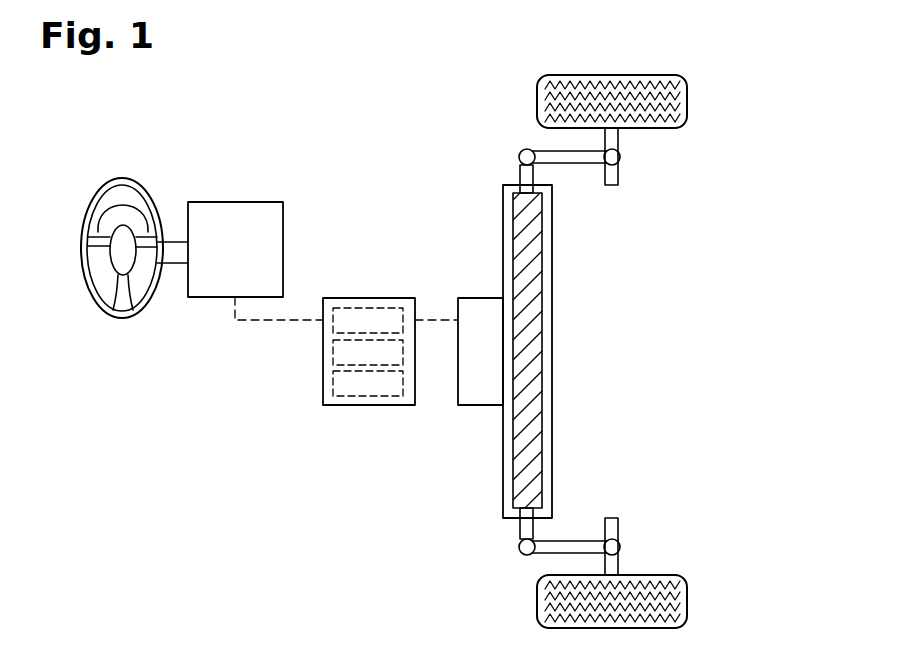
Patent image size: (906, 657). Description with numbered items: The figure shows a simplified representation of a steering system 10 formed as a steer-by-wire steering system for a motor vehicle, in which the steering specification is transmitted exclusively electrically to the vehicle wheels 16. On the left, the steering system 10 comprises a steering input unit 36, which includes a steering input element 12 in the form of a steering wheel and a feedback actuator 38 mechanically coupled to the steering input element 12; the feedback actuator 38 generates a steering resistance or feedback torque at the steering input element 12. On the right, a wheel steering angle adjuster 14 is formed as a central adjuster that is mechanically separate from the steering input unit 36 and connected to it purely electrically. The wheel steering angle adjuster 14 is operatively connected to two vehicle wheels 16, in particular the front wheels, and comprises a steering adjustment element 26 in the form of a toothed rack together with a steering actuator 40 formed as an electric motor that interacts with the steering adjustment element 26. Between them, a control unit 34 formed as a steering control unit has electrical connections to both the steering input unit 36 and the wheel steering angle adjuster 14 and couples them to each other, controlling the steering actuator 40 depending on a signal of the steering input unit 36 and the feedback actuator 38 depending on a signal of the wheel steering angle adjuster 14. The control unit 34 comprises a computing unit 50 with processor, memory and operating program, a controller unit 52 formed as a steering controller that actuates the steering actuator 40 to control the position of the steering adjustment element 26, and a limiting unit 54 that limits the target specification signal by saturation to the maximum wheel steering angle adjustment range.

The steering system 10 is at (662, 196).
The steering input element 12 is at (113, 170).
The wheel steering angle adjuster 14 is at (506, 155).
The vehicle wheels 16 is at (686, 100).
The steering adjustment element 26 is at (577, 387).
The control unit 34 is at (357, 315).
The steering input unit 36 is at (158, 183).
The feedback actuator 38 is at (235, 190).
The steering actuator 40 is at (478, 412).
The computing unit 50 is at (322, 332).
The controller unit 52 is at (322, 363).
The limiting unit 54 is at (322, 393).